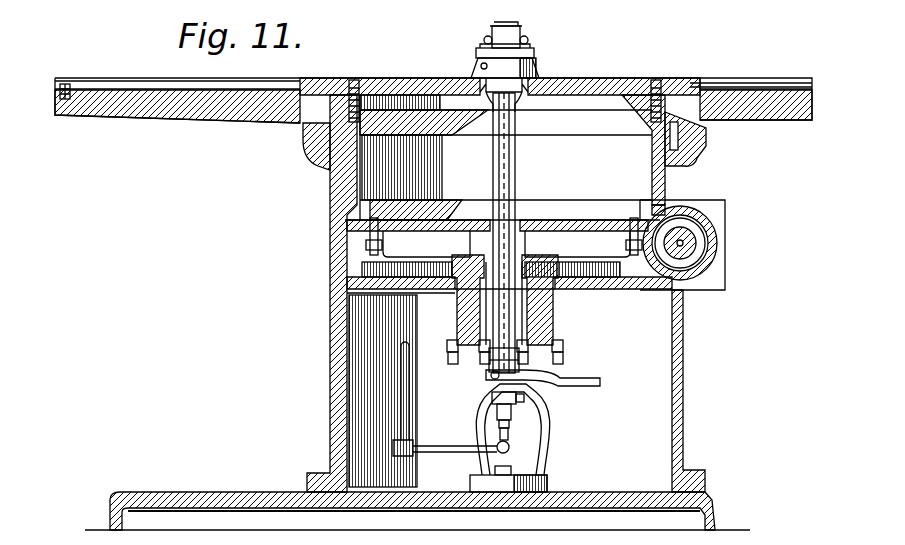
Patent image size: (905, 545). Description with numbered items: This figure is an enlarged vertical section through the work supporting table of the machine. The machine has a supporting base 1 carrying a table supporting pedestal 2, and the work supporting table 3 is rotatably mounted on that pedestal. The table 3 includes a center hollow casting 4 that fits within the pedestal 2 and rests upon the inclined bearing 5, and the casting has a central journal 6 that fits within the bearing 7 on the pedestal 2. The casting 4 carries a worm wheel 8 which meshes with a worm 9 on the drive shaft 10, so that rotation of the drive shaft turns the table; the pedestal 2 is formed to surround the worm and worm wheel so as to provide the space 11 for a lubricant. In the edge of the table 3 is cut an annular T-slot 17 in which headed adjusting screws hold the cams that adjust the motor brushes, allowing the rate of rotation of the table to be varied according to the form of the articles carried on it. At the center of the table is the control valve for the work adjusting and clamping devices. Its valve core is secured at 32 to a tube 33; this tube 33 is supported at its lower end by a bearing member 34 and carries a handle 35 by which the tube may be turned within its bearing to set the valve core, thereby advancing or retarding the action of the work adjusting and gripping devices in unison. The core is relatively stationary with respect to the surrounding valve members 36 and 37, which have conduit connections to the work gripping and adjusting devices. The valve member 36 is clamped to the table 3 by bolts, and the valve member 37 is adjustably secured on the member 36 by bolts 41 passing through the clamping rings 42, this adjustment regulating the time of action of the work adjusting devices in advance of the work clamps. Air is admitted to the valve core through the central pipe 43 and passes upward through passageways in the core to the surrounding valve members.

The supporting base 1 is at (212, 492).
The table supporting pedestal 2 is at (684, 385).
The work supporting table 3 is at (106, 78).
The center hollow casting 4 is at (600, 78).
The inclined bearing 5 is at (700, 148).
The central journal 6 is at (554, 333).
The bearing 7 is at (456, 322).
The worm wheel 8 is at (632, 290).
The worm 9 is at (718, 241).
The drive shaft 10 is at (702, 245).
The space for a lubricant 11 is at (612, 290).
The annular T-slot 17 is at (60, 92).
The securing point of valve core to tube 32 is at (515, 105).
The tube 33 is at (516, 174).
The bearing member 34 is at (546, 436).
The handle 35 is at (598, 383).
The valve member 36 is at (470, 72).
The valve member 37 is at (522, 38).
The bolts 41 is at (502, 47).
The clamping rings 42 is at (534, 55).
The central pipe 43 is at (489, 370).